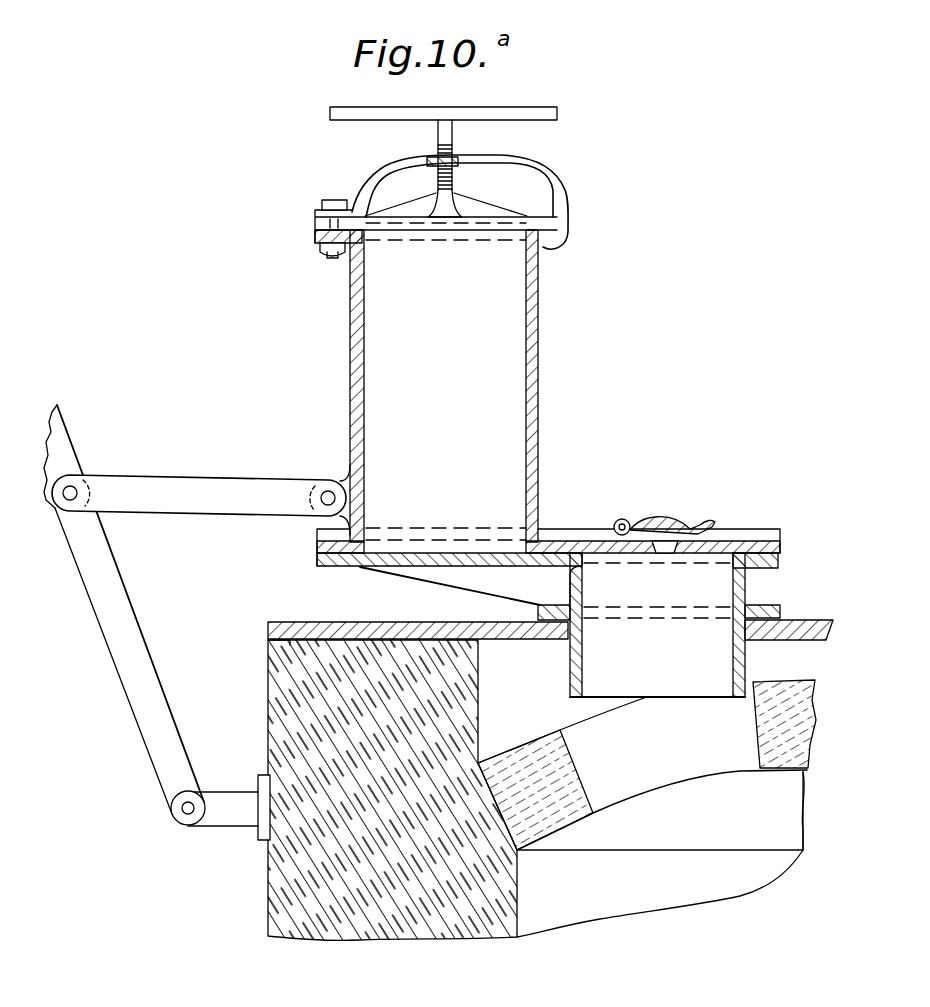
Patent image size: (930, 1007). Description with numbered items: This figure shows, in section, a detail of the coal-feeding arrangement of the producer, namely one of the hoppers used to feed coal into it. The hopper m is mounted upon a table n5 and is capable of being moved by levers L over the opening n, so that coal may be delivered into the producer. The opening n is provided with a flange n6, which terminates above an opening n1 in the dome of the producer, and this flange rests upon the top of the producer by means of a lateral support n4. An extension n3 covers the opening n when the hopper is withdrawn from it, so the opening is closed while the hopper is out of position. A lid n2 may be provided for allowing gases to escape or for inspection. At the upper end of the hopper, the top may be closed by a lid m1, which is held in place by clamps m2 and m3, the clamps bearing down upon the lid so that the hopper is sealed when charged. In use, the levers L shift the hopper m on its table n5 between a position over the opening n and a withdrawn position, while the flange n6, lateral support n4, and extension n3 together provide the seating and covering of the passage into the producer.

The lever L is at (195, 622).
The hopper m is at (439, 382).
The lid m1 is at (513, 200).
The clamp m2 is at (524, 169).
The clamp m3 is at (443, 148).
The opening n is at (657, 625).
The opening in the dome of the producer n1 is at (647, 765).
The lid n2 is at (675, 508).
The extension n3 is at (736, 544).
The lateral support n4 is at (773, 593).
The table n5 is at (445, 565).
The flange n6 is at (578, 677).